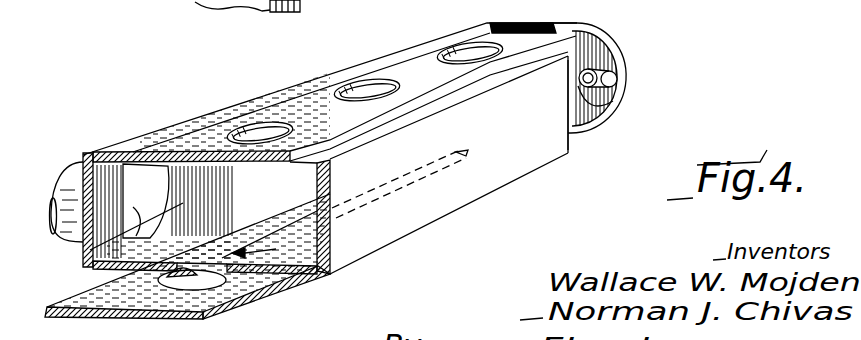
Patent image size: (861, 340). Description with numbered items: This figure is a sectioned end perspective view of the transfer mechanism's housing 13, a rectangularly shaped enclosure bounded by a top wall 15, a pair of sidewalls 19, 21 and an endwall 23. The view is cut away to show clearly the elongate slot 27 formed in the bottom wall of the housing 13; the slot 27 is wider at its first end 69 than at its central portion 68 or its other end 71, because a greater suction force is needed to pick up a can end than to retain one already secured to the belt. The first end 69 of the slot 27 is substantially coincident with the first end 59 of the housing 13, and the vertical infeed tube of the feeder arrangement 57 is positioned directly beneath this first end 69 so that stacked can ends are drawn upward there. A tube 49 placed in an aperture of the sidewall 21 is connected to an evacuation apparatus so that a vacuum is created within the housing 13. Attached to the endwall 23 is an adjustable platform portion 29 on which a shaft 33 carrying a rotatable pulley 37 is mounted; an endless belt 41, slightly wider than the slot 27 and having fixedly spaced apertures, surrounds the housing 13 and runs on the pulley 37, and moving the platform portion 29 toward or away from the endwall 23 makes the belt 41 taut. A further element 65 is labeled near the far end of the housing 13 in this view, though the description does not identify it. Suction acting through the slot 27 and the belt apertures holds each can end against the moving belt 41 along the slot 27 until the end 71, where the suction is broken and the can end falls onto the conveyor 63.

The housing 13 is at (313, 63).
The top wall 15 is at (372, 52).
The sidewall 19 is at (538, 163).
The sidewall 21 is at (237, 101).
The endwall 23 is at (570, 145).
The elongate slot 27 is at (300, 273).
The adjustable platform portion 29 is at (608, 104).
The shaft 33 is at (618, 80).
The rotatable pulley 37 is at (605, 62).
The endless belt 41 is at (468, 28).
The tube 49 is at (72, 163).
The feeder arrangement 57 is at (195, 2).
The first end of housing 59 is at (107, 274).
The conveyor 63 is at (752, 0).
The tab 65 is at (544, 66).
The central portion of slot 68 is at (386, 178).
The first end of slot 69 is at (203, 270).
The second end of slot 71 is at (455, 156).